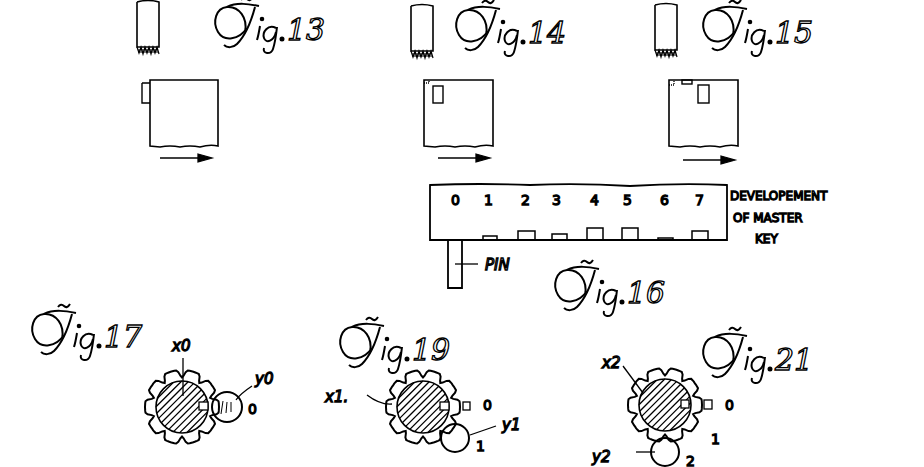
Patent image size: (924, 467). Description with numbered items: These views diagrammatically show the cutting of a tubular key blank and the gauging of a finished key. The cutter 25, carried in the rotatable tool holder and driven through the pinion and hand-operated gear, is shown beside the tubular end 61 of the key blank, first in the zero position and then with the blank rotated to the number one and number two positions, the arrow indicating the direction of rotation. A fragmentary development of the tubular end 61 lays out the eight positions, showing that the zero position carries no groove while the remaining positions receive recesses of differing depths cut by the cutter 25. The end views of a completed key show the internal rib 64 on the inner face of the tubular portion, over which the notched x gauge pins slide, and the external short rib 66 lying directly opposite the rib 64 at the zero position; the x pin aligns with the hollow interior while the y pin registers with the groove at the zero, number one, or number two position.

In FIG. 13, the cutting tool 25 is at (150, 20).
In FIG. 14, the cutting tool 25 is at (424, 23).
In FIG. 15, the cutting tool 25 is at (668, 25).
In FIG. 13, the tubular end of the key blank 61 is at (200, 117).
In FIG. 14, the tubular end of the key blank 61 is at (483, 117).
In FIG. 15, the tubular end of the key blank 61 is at (724, 114).
In FIG. 17, the rib portion 64 is at (204, 396).
In FIG. 19, the rib portion 64 is at (446, 396).
In FIG. 21, the rib portion 64 is at (670, 380).
In FIG. 17, the external short rib 66 is at (226, 422).
In FIG. 19, the external short rib 66 is at (470, 402).
In FIG. 21, the external short rib 66 is at (716, 403).